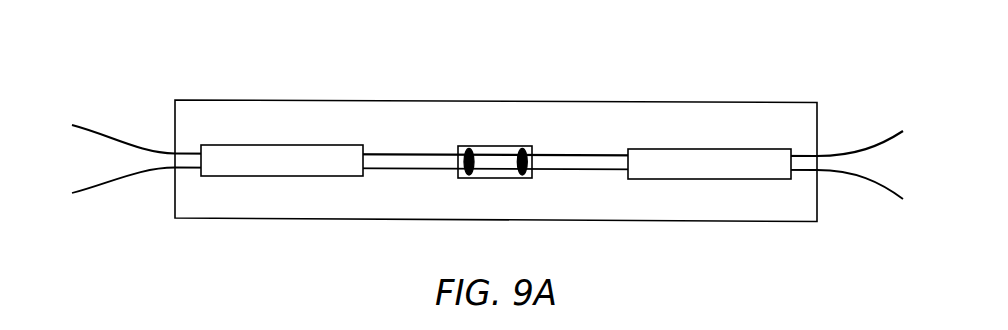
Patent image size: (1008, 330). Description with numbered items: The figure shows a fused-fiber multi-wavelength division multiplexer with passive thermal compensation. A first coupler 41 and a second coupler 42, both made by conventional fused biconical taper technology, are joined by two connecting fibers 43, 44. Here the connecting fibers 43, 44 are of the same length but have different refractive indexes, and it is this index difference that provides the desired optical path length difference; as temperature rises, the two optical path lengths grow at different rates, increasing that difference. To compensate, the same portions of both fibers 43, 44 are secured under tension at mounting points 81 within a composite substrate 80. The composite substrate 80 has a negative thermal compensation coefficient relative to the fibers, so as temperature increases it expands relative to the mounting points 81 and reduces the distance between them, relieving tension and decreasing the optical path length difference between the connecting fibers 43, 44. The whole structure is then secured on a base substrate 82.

The first coupler 41 is at (279, 155).
The second coupler 42 is at (740, 155).
The connecting fiber 43 is at (395, 152).
The connecting fiber 44 is at (408, 170).
The composite substrate 80 is at (498, 177).
The mounting points 81 is at (468, 148).
The base substrate 82 is at (725, 216).